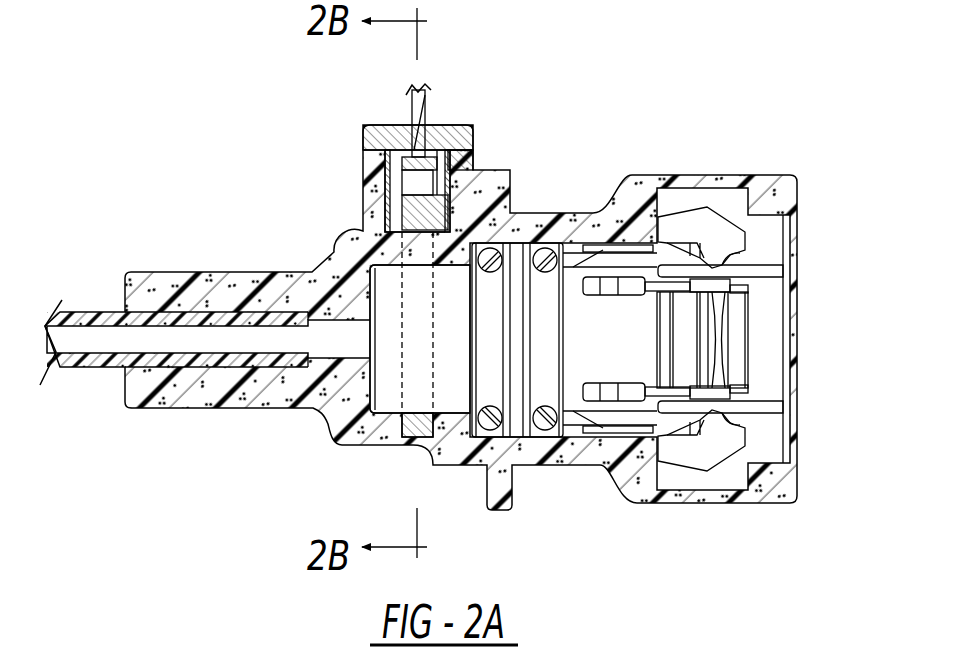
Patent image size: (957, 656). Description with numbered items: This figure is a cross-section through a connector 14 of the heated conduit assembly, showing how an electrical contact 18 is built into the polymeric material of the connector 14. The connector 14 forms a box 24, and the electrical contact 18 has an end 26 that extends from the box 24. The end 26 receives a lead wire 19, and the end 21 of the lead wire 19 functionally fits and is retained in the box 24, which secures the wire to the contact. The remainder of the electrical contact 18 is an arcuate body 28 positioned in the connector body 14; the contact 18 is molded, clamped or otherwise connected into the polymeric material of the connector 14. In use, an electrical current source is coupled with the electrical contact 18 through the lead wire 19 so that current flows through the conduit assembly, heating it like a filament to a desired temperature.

The connector 14 is at (653, 175).
The electrical contact 18 is at (398, 312).
The lead wire 19 is at (423, 110).
The end of the lead wire 21 is at (462, 128).
The box 24 is at (473, 152).
The end of the electrical contact 26 is at (417, 210).
The arcuate body 28 is at (352, 447).